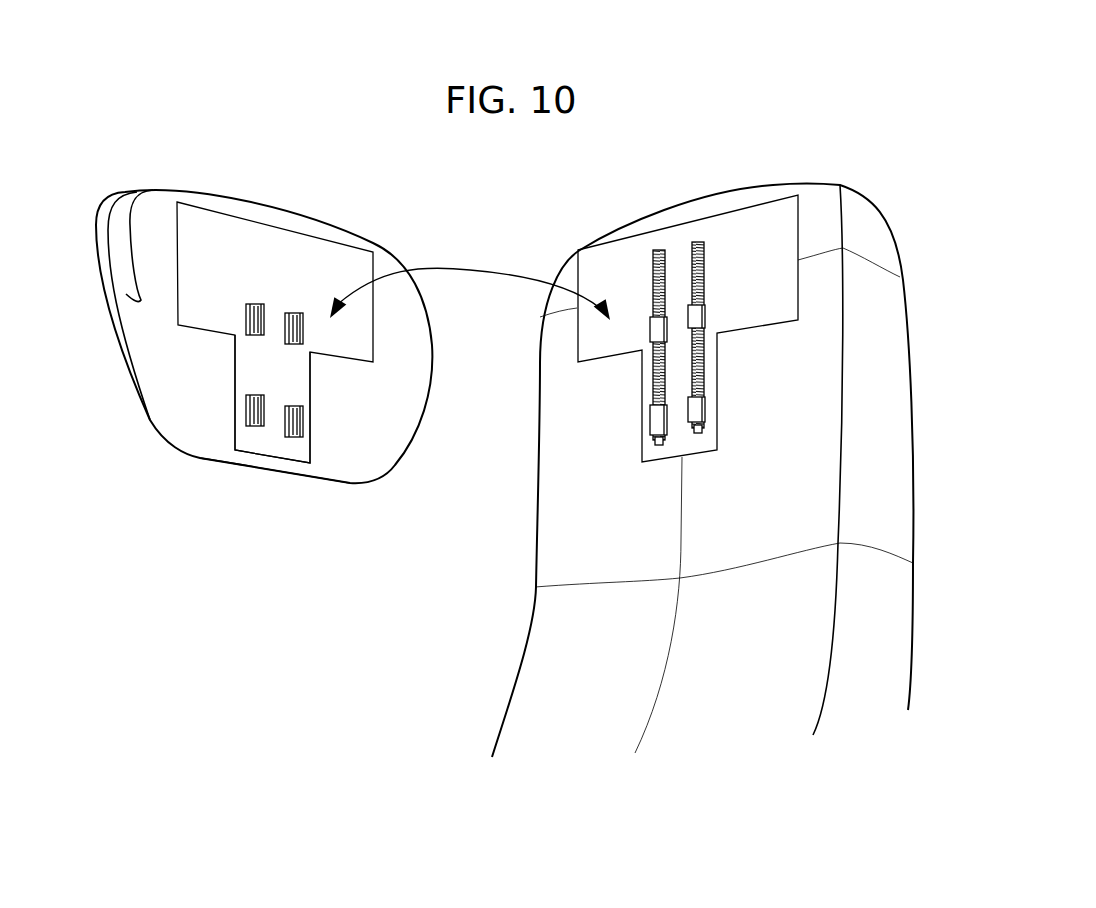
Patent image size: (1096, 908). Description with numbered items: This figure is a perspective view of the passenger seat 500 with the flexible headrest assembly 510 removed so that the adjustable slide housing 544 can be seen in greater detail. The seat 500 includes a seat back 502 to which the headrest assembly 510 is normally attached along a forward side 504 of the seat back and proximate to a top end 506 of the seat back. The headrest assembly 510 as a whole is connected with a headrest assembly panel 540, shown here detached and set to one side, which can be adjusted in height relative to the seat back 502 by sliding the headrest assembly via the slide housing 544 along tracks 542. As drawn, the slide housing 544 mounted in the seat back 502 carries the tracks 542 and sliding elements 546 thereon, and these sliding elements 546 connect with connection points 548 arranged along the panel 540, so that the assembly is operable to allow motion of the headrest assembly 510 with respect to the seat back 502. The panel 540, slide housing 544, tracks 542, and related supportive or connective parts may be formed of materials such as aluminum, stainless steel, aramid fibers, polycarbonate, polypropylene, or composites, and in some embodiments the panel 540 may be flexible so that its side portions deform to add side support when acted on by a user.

The passenger seat 500 is at (497, 208).
The seat back 502 is at (903, 396).
The forward side 504 is at (760, 606).
The top end 506 is at (870, 207).
The flexible headrest assembly 510 is at (190, 183).
The headrest assembly panel 540 is at (250, 442).
The tracks 542 is at (652, 286).
The slide housing 544 is at (760, 212).
The sliding elements 546 is at (650, 331).
The connection points 548 is at (246, 318).